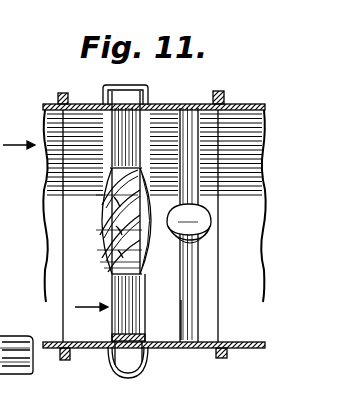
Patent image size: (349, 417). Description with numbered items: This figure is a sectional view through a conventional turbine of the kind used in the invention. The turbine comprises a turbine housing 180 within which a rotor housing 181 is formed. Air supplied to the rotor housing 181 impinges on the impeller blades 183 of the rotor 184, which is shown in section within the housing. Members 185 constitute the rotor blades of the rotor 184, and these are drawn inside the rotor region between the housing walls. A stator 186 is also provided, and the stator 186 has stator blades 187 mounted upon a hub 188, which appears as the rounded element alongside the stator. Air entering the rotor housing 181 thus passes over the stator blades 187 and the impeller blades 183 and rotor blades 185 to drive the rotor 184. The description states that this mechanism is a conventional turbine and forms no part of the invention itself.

The turbine housing 180 is at (80, 103).
The rotor housing 181 is at (128, 378).
The impeller blades 183 is at (133, 350).
The rotor 184 is at (85, 243).
The rotor blades 185 is at (113, 222).
The stator 186 is at (207, 297).
The stator blades 187 is at (199, 259).
The hub 188 is at (211, 219).